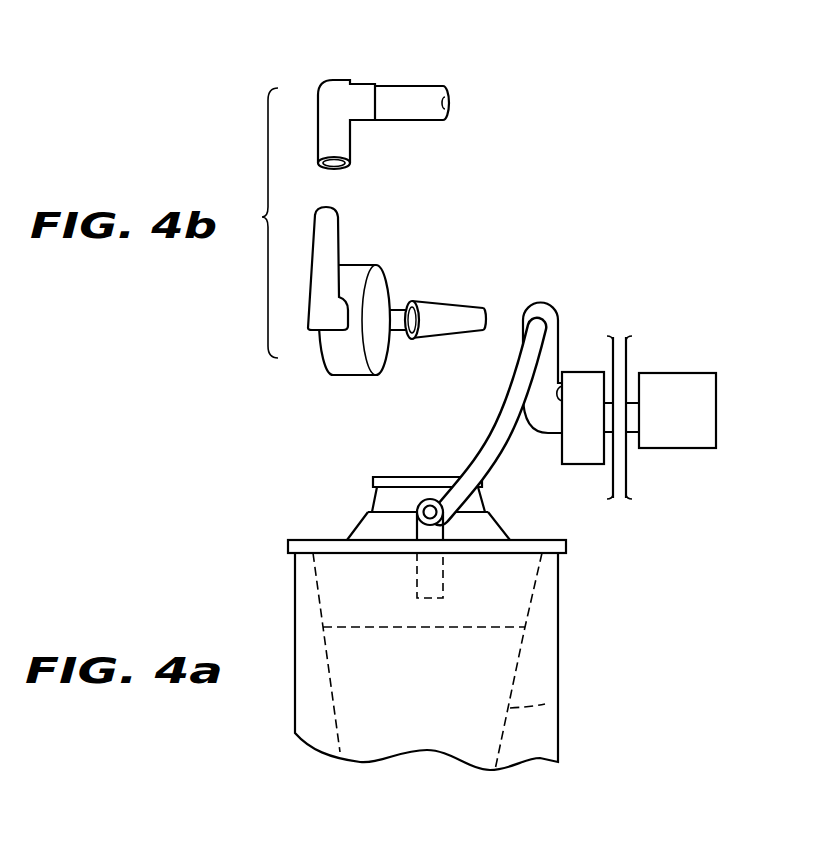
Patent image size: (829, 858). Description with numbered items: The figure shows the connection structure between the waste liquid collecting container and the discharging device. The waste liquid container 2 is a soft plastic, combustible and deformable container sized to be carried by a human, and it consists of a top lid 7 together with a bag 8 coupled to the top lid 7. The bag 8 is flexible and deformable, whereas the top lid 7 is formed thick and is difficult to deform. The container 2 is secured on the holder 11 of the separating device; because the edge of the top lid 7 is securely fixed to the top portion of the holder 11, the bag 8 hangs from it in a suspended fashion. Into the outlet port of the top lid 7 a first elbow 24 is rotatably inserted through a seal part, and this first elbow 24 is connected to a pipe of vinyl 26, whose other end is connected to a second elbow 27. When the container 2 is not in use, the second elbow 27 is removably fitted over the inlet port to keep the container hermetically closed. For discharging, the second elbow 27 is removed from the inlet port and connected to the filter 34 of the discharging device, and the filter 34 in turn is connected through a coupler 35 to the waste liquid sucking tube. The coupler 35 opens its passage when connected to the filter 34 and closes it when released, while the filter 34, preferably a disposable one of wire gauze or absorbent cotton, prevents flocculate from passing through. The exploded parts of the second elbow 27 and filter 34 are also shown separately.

In FIG. 4a, the waste liquid container 2 is at (475, 645).
In FIG. 4a, the top lid 7 is at (455, 537).
In FIG. 4a, the bag 8 is at (558, 704).
In FIG. 4a, the holder 11 is at (558, 659).
In FIG. 4a, the first elbow 24 is at (420, 532).
In FIG. 4b, the pipe of vinyl 26 is at (408, 94).
In FIG. 4a, the pipe of vinyl 26 is at (493, 443).
In FIG. 4b, the second elbow 27 is at (338, 143).
In FIG. 4a, the second elbow 27 is at (540, 310).
In FIG. 4b, the filter 34 is at (376, 293).
In FIG. 4a, the filter 34 is at (586, 372).
In FIG. 4a, the coupler 35 is at (681, 390).